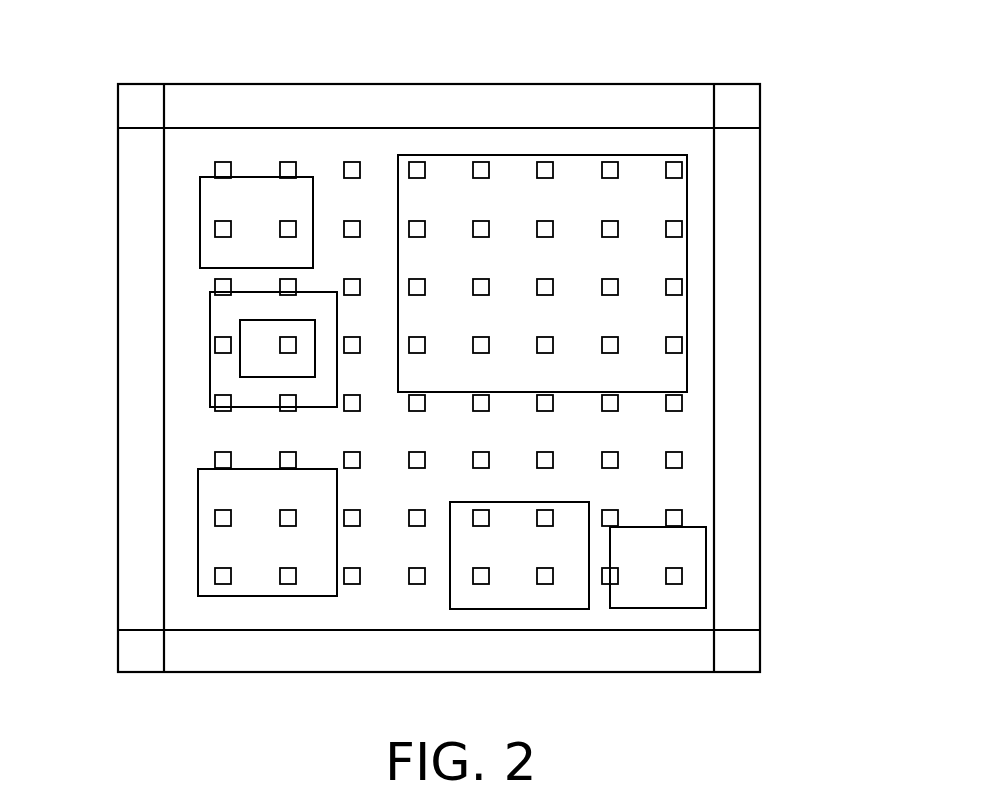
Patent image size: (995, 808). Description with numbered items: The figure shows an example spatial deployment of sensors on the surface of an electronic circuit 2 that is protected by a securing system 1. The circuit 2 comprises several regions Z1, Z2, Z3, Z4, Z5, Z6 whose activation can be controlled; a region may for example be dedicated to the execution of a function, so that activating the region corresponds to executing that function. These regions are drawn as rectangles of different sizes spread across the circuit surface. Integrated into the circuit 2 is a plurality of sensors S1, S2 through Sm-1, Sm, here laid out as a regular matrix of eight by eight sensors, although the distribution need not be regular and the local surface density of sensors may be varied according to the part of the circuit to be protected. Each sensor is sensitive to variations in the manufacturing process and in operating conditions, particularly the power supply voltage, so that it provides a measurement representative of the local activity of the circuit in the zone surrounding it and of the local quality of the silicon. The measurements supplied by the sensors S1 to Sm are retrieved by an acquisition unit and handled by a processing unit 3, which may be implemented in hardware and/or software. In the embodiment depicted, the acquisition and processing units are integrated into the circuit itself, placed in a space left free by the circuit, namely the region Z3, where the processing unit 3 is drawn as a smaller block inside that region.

The system 1 is at (786, 154).
The electronic circuit 2 is at (697, 452).
The processing unit 3 is at (240, 358).
The sensor S1 is at (223, 162).
The sensor S2 is at (288, 162).
The sensor Sm is at (684, 574).
The sensor Sm-1 is at (607, 583).
The region Z1 is at (508, 155).
The region Z2 is at (200, 208).
The region Z3 is at (210, 313).
The region Z4 is at (267, 597).
The region Z5 is at (532, 610).
The region Z6 is at (680, 609).